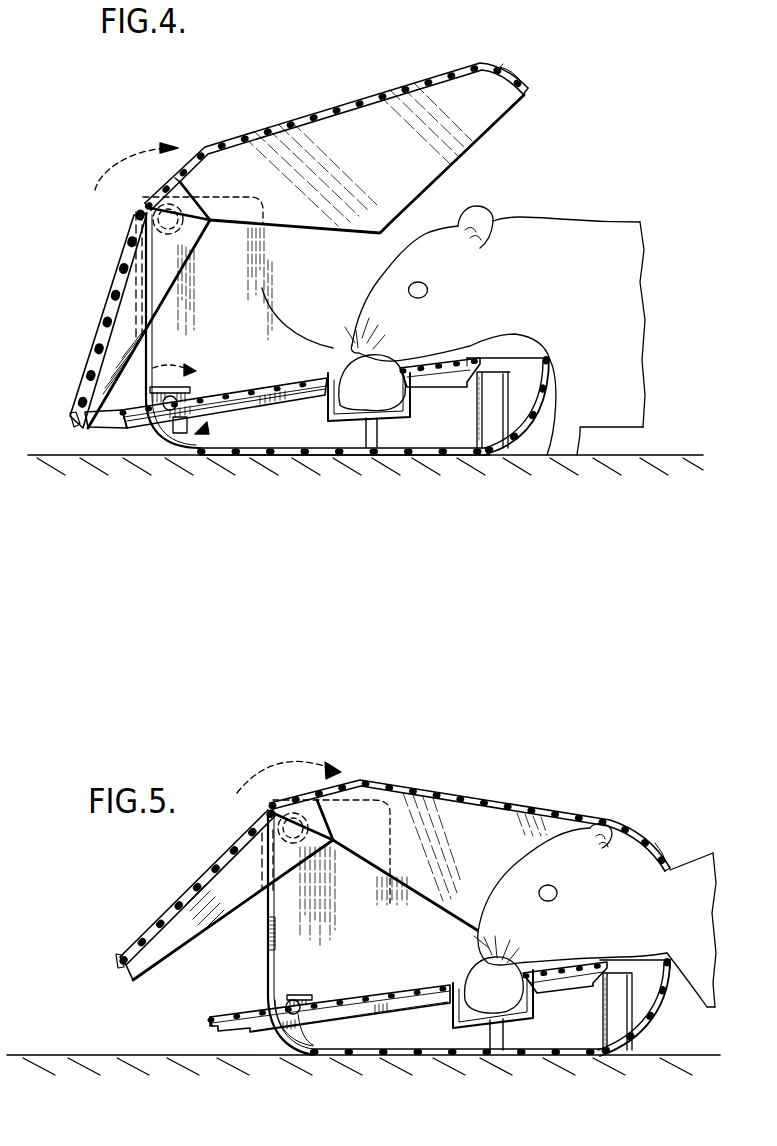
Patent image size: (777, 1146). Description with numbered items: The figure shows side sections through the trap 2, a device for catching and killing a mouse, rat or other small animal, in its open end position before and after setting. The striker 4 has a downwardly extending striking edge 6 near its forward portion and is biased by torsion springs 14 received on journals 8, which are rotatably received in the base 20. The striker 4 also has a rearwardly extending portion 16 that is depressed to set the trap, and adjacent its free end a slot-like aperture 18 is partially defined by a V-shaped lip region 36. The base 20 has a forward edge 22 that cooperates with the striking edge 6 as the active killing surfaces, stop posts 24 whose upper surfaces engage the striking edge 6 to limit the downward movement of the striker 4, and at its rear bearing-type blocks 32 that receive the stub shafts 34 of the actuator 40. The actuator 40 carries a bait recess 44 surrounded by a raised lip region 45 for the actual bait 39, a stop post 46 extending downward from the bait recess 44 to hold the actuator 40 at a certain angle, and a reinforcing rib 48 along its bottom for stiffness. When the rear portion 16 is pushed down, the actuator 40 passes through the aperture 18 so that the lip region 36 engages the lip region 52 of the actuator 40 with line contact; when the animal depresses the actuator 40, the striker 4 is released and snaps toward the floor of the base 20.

In FIG. 4, the trap 2 is at (592, 122).
In FIG. 5, the trap 2 is at (426, 750).
In FIG. 4, the striker 4 is at (426, 56).
In FIG. 5, the striker 4 is at (559, 788).
In FIG. 4, the striking edge 6 is at (516, 82).
In FIG. 5, the striking edge 6 is at (673, 862).
In FIG. 4, the journals 8 is at (185, 232).
In FIG. 4, the torsion springs 14 is at (148, 200).
In FIG. 5, the torsion springs 14 is at (266, 935).
In FIG. 4, the rearwardly extending portion 16 is at (112, 317).
In FIG. 5, the rearwardly extending portion 16 is at (190, 884).
In FIG. 4, the slot-like aperture 18 is at (80, 394).
In FIG. 5, the slot-like aperture 18 is at (137, 940).
In FIG. 4, the base 20 is at (533, 452).
In FIG. 5, the base 20 is at (674, 1028).
In FIG. 4, the forward edge 22 is at (550, 360).
In FIG. 5, the forward edge 22 is at (668, 958).
In FIG. 4, the stop posts 24 is at (493, 437).
In FIG. 5, the stop posts 24 is at (610, 1040).
In FIG. 4, the bearing-type blocks 32 is at (187, 447).
In FIG. 5, the bearing-type blocks 32 is at (318, 1030).
In FIG. 4, the stub shafts 34 is at (166, 412).
In FIG. 5, the stub shafts 34 is at (297, 1014).
In FIG. 4, the lip region 36 is at (68, 423).
In FIG. 5, the lip region 36 is at (117, 962).
In FIG. 4, the actual bait 39 is at (356, 393).
In FIG. 5, the actual bait 39 is at (512, 998).
In FIG. 4, the actuator 40 is at (270, 377).
In FIG. 5, the actuator 40 is at (370, 987).
In FIG. 4, the bait recess 44 is at (428, 430).
In FIG. 5, the bait recess 44 is at (553, 997).
In FIG. 4, the raised lip region 45 is at (330, 368).
In FIG. 5, the raised lip region 45 is at (458, 980).
In FIG. 4, the stop post 46 is at (385, 447).
In FIG. 5, the stop post 46 is at (513, 1040).
In FIG. 4, the reinforcing rib 48 is at (256, 412).
In FIG. 5, the reinforcing rib 48 is at (407, 1015).
In FIG. 4, the lip region 52 is at (92, 428).
In FIG. 5, the lip region 52 is at (214, 1031).